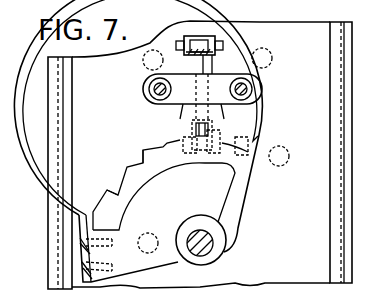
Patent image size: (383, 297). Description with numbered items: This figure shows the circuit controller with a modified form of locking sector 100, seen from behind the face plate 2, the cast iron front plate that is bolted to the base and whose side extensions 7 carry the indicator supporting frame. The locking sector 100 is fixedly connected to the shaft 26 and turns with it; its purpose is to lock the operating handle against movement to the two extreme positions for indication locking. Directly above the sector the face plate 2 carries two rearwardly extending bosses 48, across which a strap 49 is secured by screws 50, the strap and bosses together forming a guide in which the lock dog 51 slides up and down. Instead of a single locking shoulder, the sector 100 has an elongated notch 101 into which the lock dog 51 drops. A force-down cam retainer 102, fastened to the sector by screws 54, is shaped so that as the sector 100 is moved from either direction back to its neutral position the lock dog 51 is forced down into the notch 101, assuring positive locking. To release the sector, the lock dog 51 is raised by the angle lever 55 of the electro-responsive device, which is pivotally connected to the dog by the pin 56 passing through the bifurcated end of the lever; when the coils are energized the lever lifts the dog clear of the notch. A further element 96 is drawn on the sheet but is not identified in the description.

The face plate 2 is at (80, 94).
The extensions 7 is at (336, 98).
The shaft 26 is at (213, 243).
The bosses 48 is at (241, 77).
The strap 49 is at (209, 82).
The screws 50 is at (149, 88).
The lock dog 51 is at (205, 65).
The screws 54 is at (113, 265).
The angle lever 55 is at (207, 36).
The pin 56 is at (216, 50).
The guide channel 96 is at (60, 182).
The locking sector 100 is at (239, 165).
The elongated notch 101 is at (143, 168).
The force-down cam retainer 102 is at (158, 126).